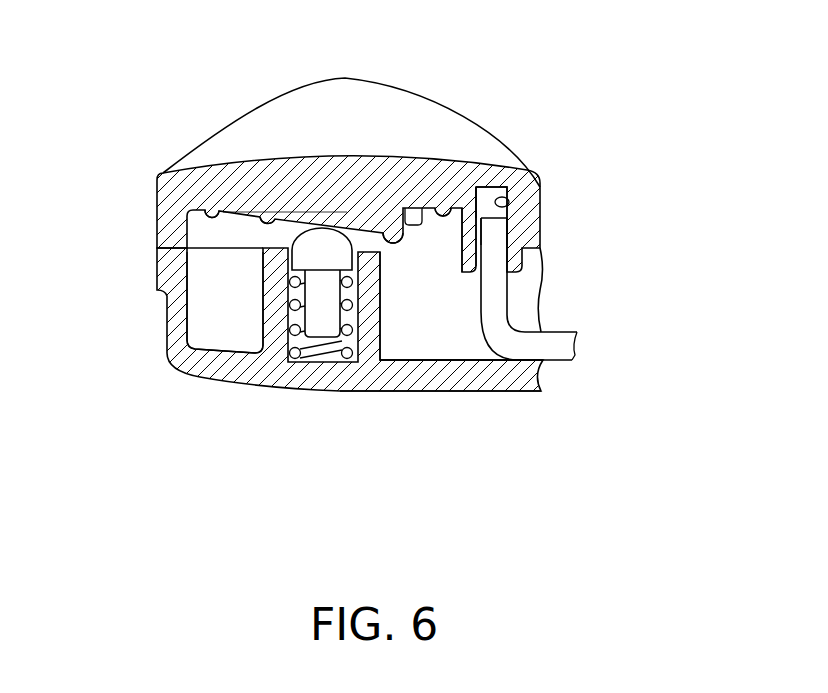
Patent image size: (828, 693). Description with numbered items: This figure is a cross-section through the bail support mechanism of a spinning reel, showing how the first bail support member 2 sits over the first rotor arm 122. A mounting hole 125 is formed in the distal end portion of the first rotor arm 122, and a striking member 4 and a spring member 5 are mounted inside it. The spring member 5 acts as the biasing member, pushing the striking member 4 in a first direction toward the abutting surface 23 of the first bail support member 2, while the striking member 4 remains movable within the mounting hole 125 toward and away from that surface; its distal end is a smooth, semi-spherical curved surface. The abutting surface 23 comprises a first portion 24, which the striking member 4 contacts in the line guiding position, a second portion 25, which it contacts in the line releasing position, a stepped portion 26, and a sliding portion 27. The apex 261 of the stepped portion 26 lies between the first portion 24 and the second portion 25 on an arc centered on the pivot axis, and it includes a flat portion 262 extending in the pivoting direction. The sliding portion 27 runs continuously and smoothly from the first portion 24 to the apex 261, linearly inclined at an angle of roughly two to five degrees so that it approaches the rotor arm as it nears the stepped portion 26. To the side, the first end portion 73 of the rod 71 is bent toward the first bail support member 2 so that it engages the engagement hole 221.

The first bail support member 2 is at (187, 131).
The first portion 24 is at (208, 203).
The sliding portion 27 is at (276, 209).
The flat portion 262 is at (383, 224).
The stepped portion 26 is at (407, 206).
The second portion 25 is at (464, 206).
The engagement hole 221 is at (508, 201).
The first end portion 73 is at (496, 235).
The rod 71 is at (560, 323).
The apex 261 is at (404, 238).
The abutting surface 23 is at (245, 222).
The spring member 5 is at (268, 345).
The striking member 4 is at (322, 322).
The mounting hole 125 is at (346, 358).
The first rotor arm 122 is at (470, 392).